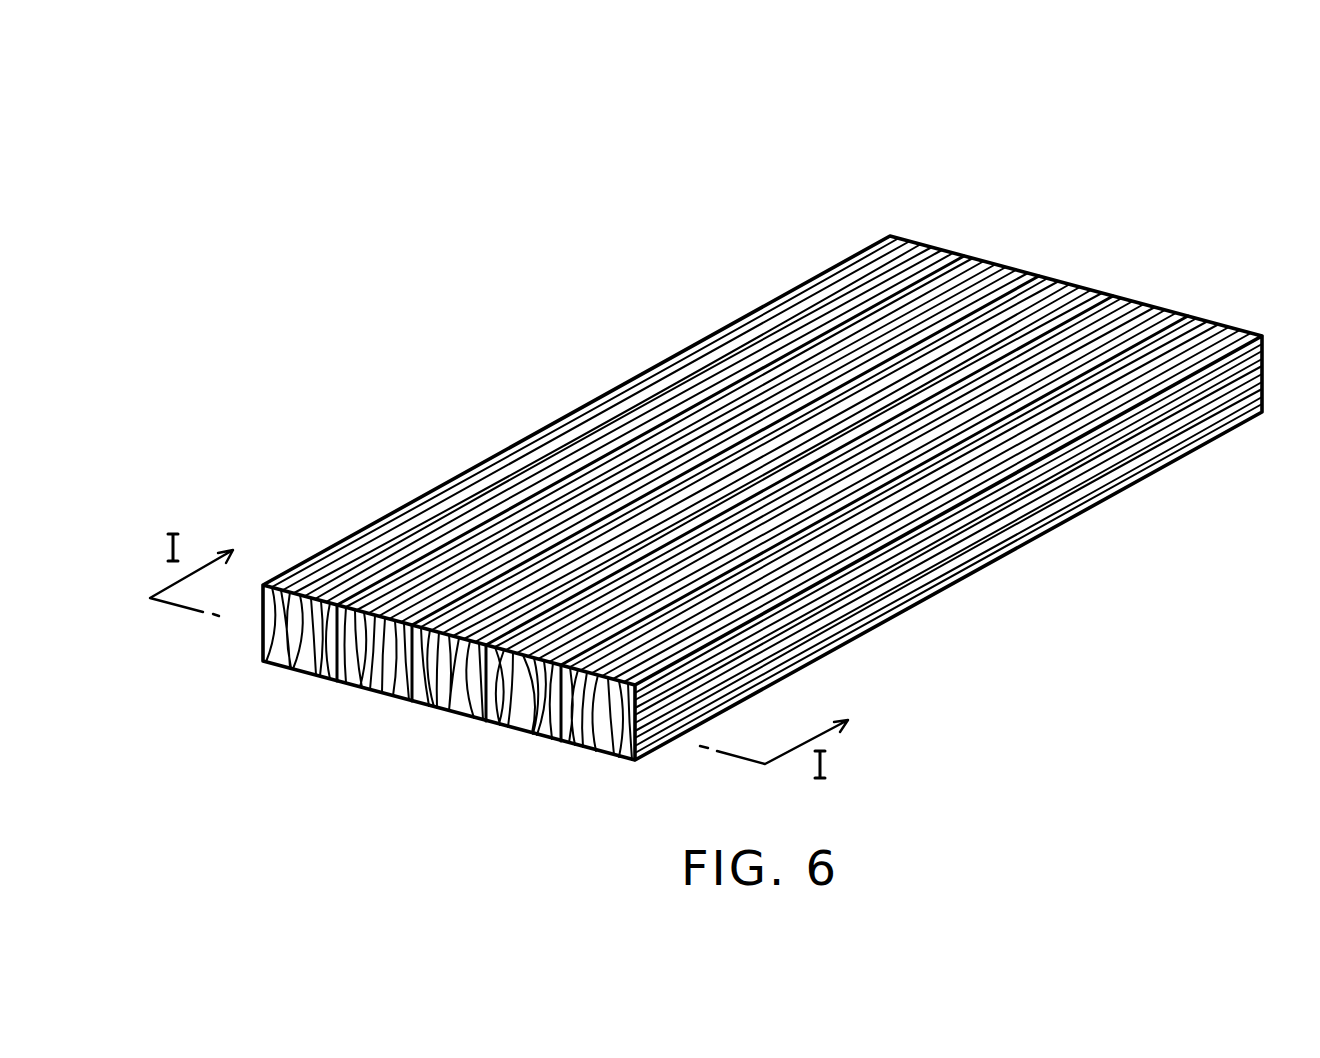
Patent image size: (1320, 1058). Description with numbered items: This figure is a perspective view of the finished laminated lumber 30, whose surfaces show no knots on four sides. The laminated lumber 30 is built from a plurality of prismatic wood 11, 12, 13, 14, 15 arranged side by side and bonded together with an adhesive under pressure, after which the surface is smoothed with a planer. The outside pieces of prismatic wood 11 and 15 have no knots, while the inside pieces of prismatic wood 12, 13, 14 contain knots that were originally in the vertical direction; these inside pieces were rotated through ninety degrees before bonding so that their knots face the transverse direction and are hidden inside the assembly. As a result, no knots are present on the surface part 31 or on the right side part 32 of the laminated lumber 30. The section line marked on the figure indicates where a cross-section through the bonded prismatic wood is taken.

The laminated lumber 30 is at (620, 176).
The surface part 31 is at (640, 462).
The right side part 32 is at (948, 563).
The prismatic wood 11 is at (922, 245).
The prismatic wood 12 is at (1000, 264).
The prismatic wood 13 is at (1073, 285).
The prismatic wood 14 is at (1148, 310).
The prismatic wood 15 is at (1232, 331).